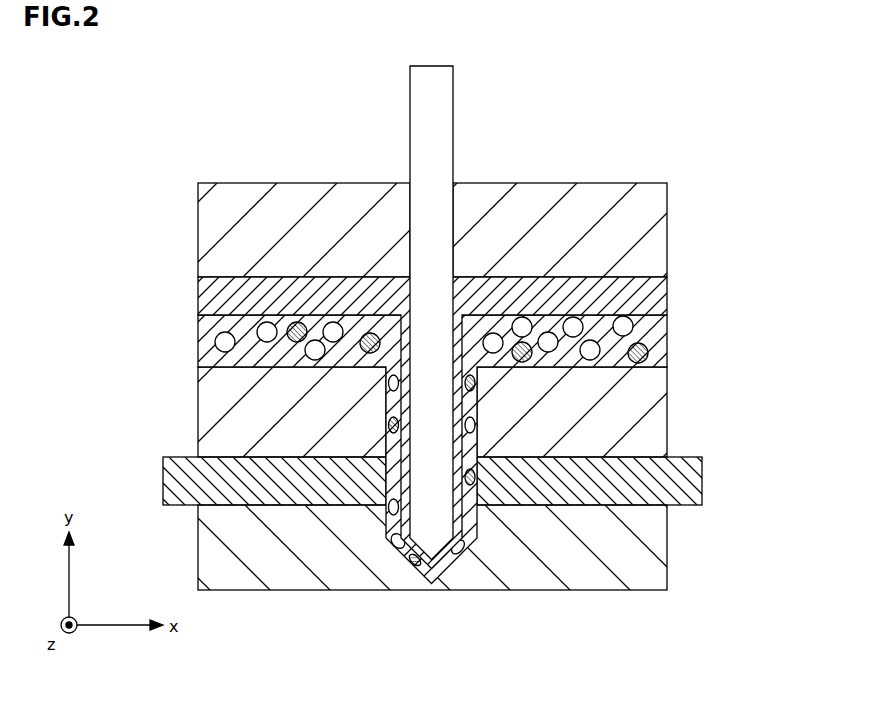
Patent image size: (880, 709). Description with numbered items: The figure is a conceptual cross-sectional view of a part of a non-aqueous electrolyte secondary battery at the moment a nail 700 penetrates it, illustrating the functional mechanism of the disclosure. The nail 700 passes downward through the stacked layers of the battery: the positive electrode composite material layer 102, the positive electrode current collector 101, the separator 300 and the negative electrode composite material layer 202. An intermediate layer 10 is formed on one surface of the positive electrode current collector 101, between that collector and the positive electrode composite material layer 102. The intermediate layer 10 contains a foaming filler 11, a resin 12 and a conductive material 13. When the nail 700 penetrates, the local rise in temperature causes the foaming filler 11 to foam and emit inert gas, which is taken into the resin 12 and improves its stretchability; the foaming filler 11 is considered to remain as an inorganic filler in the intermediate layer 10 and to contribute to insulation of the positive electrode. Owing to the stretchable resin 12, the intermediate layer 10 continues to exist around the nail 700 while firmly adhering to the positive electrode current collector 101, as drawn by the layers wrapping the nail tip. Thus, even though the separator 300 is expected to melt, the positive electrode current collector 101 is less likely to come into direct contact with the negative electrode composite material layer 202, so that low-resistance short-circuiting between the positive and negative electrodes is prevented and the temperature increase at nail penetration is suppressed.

The nail 700 is at (438, 122).
The positive electrode composite material layer 102 is at (597, 237).
The positive electrode current collector 101 is at (643, 297).
The intermediate layer 10 is at (718, 313).
The foaming filler 11 is at (632, 323).
The resin 12 is at (643, 340).
The conductive material 13 is at (650, 356).
The separator 300 is at (673, 485).
The negative electrode composite material layer 202 is at (638, 573).